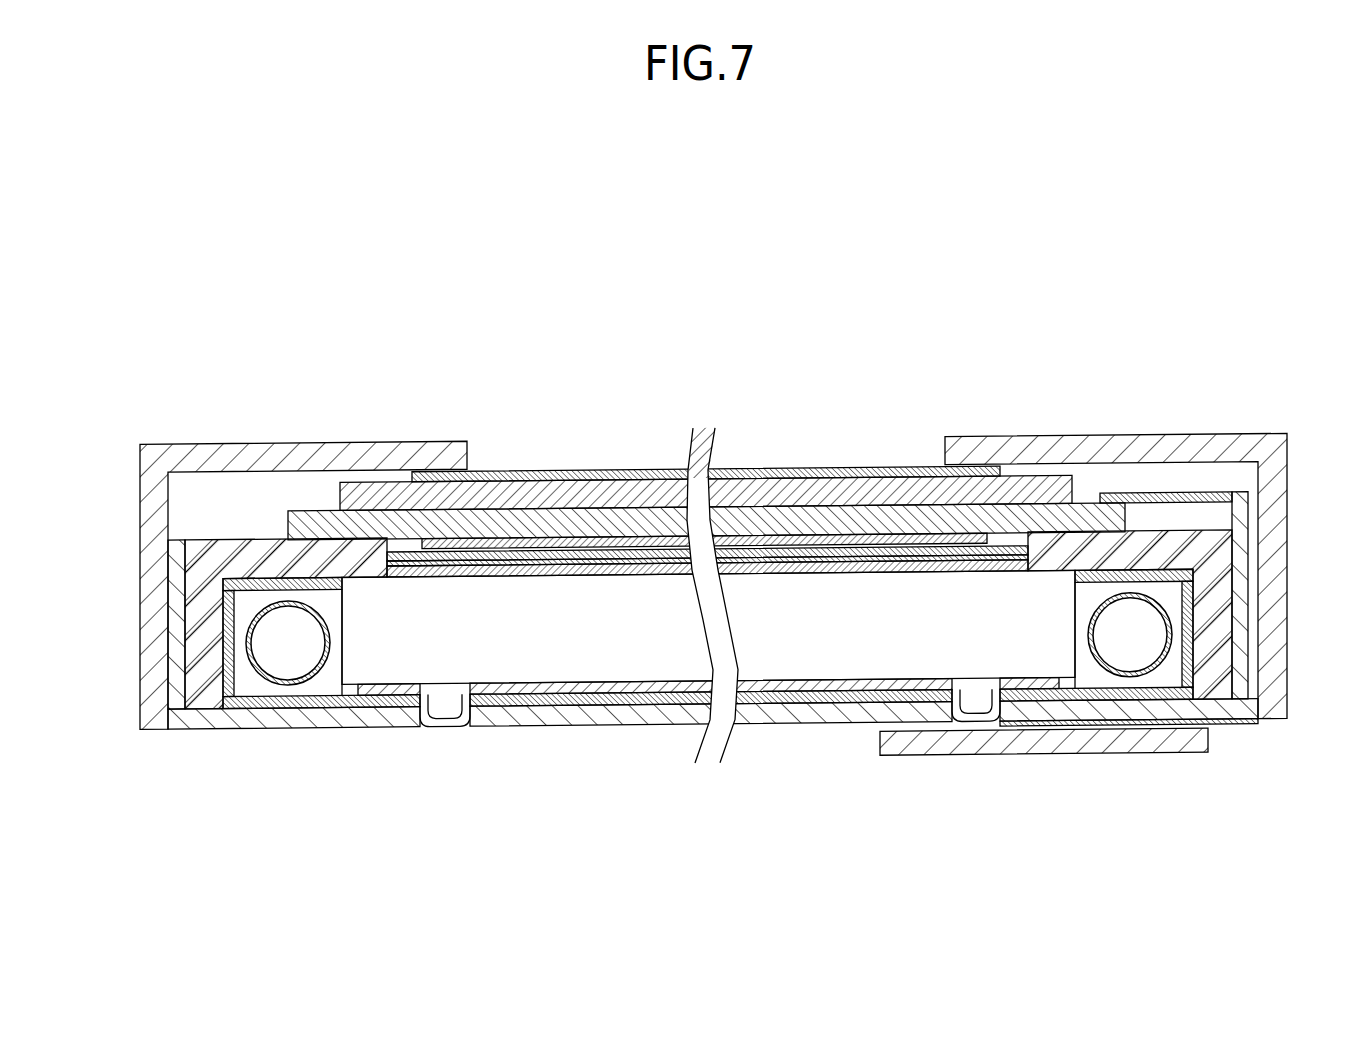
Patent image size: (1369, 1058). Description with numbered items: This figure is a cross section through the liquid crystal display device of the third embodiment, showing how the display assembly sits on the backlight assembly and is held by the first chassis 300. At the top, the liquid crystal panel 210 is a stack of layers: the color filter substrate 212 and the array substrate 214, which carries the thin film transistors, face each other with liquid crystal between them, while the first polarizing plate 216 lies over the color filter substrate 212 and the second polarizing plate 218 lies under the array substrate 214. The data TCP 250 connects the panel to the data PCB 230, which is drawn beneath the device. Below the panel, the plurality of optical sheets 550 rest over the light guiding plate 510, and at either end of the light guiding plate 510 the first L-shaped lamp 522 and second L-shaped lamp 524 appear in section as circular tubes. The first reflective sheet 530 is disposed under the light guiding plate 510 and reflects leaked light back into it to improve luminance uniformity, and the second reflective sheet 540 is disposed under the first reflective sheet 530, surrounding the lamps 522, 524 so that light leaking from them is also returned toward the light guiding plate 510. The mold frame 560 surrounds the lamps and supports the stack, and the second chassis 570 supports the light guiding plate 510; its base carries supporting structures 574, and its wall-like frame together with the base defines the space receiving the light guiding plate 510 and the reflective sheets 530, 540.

The liquid crystal panel 210 is at (706, 435).
The color filter substrate 212 is at (558, 491).
The array substrate 214 is at (483, 356).
The first polarizing plate 216 is at (510, 470).
The second polarizing plate 218 is at (652, 471).
The data PCB 230 is at (1032, 746).
The data TCP 250 is at (728, 667).
The first chassis 300 is at (298, 456).
The light guiding plate 510 is at (785, 651).
The first L-shaped lamp 522 is at (1158, 674).
The second L-shaped lamp 524 is at (265, 679).
The first reflective sheet 530 is at (368, 689).
The second reflective sheet 540 is at (522, 705).
The optical sheets 550 is at (553, 574).
The mold frame 560 is at (200, 628).
The second chassis 570 is at (852, 717).
The supporting structures 574 is at (443, 733).